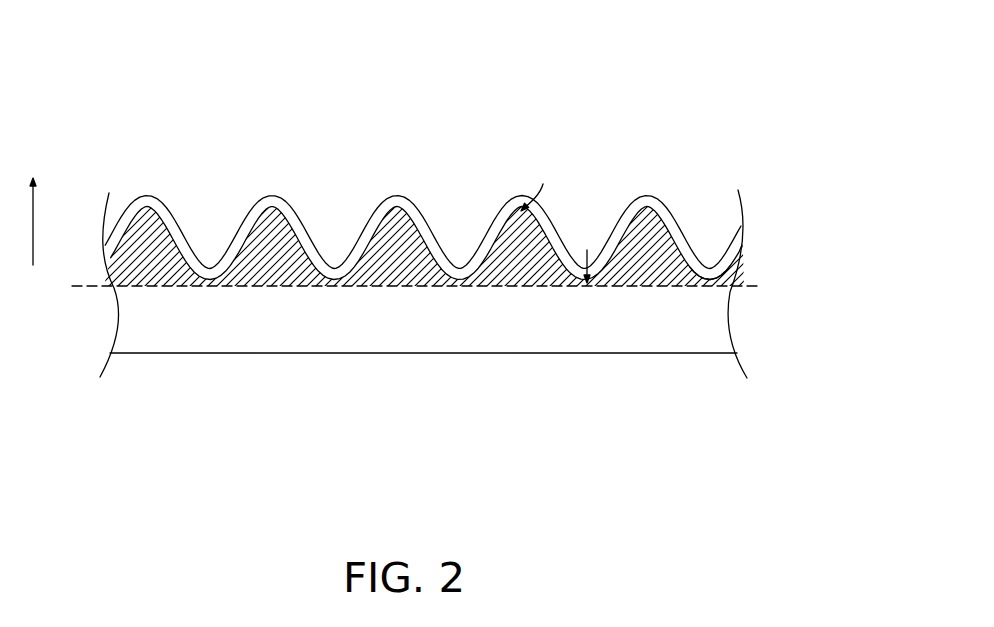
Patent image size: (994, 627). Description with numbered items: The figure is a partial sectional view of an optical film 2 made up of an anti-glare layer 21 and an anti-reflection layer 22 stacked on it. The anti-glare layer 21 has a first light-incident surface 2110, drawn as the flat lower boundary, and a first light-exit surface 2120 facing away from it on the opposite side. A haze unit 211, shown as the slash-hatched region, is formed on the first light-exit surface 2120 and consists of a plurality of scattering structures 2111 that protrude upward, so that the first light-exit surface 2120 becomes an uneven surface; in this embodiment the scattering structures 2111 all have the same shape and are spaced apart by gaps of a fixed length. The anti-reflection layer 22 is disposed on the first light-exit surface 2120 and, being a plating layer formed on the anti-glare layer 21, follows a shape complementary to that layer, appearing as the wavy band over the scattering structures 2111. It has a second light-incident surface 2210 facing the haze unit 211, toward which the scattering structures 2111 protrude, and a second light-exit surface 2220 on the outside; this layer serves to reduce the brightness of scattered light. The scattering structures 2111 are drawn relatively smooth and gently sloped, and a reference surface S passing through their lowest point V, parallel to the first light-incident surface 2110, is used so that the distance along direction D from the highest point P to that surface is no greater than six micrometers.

The optical film 2 is at (98, 54).
The anti-glare layer 21 is at (705, 313).
The haze unit 211 is at (511, 242).
The first light-incident surface 2110 is at (628, 356).
The scattering structures 2111 is at (400, 265).
The first light-exit surface 2120 is at (690, 257).
The anti-reflection layer 22 is at (236, 242).
The second light-incident surface 2210 is at (173, 259).
The second light-exit surface 2220 is at (158, 196).